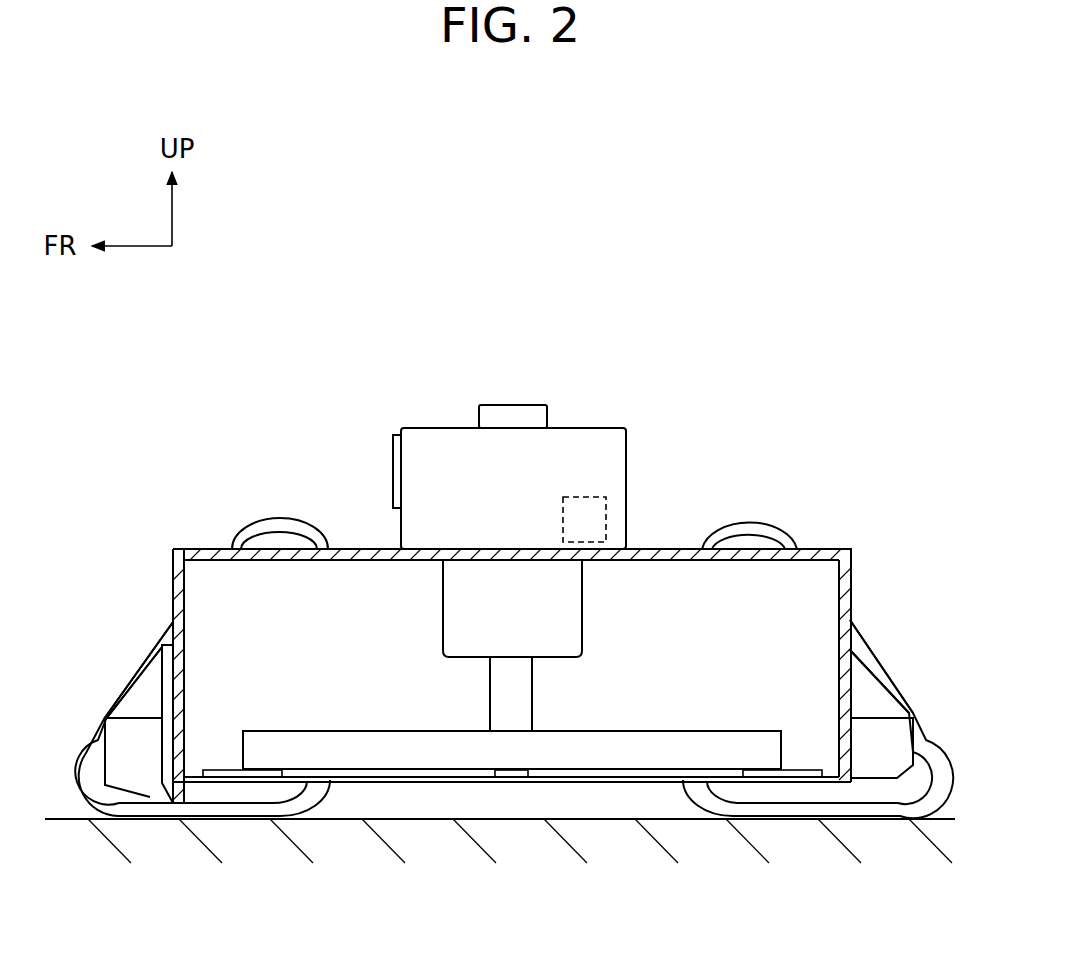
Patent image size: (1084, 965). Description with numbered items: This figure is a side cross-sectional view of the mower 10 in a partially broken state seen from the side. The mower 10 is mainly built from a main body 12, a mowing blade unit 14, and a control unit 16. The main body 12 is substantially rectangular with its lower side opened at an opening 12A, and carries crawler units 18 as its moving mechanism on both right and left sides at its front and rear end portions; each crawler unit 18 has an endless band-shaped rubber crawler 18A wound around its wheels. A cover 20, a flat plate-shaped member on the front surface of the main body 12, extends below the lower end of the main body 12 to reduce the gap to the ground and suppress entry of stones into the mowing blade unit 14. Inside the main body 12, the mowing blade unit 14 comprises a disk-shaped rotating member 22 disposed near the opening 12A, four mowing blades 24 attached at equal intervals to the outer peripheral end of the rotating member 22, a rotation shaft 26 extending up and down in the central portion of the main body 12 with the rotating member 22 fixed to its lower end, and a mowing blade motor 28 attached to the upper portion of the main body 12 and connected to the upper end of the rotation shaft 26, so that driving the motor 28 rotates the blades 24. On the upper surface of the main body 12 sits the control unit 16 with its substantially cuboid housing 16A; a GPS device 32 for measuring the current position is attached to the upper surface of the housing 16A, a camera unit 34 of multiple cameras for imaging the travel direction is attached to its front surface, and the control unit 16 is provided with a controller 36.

The mower 10 is at (283, 388).
The main body 12 is at (171, 545).
The opening 12A is at (827, 776).
The mowing blade unit 14 is at (625, 780).
The control unit 16 is at (629, 426).
The housing 16A is at (430, 427).
The crawler unit 18 is at (105, 701).
The rubber crawler 18A is at (138, 670).
The cover 20 is at (160, 768).
The rotating member 22 is at (417, 780).
The mowing blade 24 is at (213, 770).
The rotation shaft 26 is at (490, 690).
The mowing blade motor 28 is at (443, 613).
The GPS device 32 is at (518, 405).
The camera unit 34 is at (395, 477).
The controller 36 is at (606, 497).